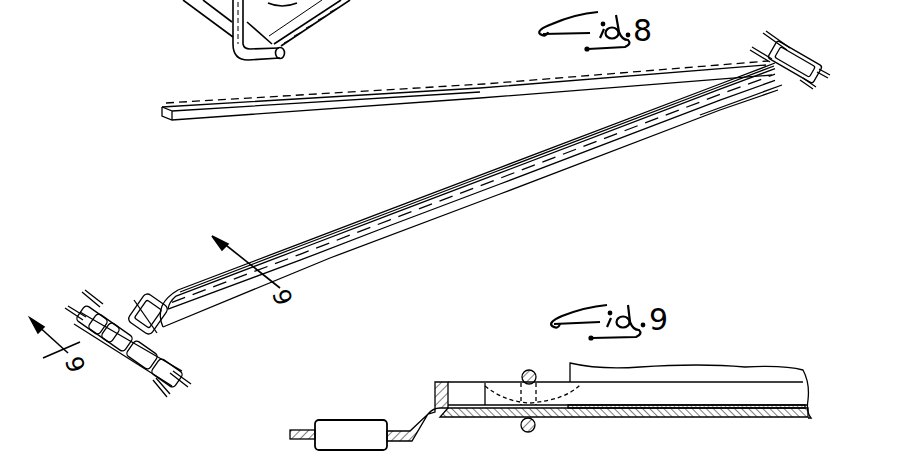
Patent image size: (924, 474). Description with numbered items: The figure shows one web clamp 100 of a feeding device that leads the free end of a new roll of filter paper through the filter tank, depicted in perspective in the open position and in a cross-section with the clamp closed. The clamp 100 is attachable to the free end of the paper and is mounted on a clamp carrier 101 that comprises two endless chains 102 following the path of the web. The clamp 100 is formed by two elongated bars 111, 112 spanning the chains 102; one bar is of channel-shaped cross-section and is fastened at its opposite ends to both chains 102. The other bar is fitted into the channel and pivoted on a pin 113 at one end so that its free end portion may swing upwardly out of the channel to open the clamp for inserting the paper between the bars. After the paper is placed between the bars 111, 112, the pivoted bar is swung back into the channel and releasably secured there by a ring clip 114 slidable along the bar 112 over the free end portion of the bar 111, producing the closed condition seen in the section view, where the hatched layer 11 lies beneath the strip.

In FIG. 8, the clamp 100 is at (581, 165).
In FIG. 9, the clamp 100 is at (677, 419).
In FIG. 8, the clamp carrier 101 is at (134, 382).
In FIG. 8, the endless chains 102 is at (103, 310).
In FIG. 9, the endless chains 102 is at (370, 428).
In FIG. 8, the elongated bar 111 is at (482, 90).
In FIG. 9, the elongated bar 111 is at (705, 390).
In FIG. 8, the elongated bar 112 is at (481, 175).
In FIG. 9, the elongated bar 112 is at (591, 420).
In FIG. 8, the pin 113 is at (768, 80).
In FIG. 8, the ring clip 114 is at (140, 306).
In FIG. 9, the ring clip 114 is at (522, 371).
In FIG. 9, the layer 11 is at (646, 420).